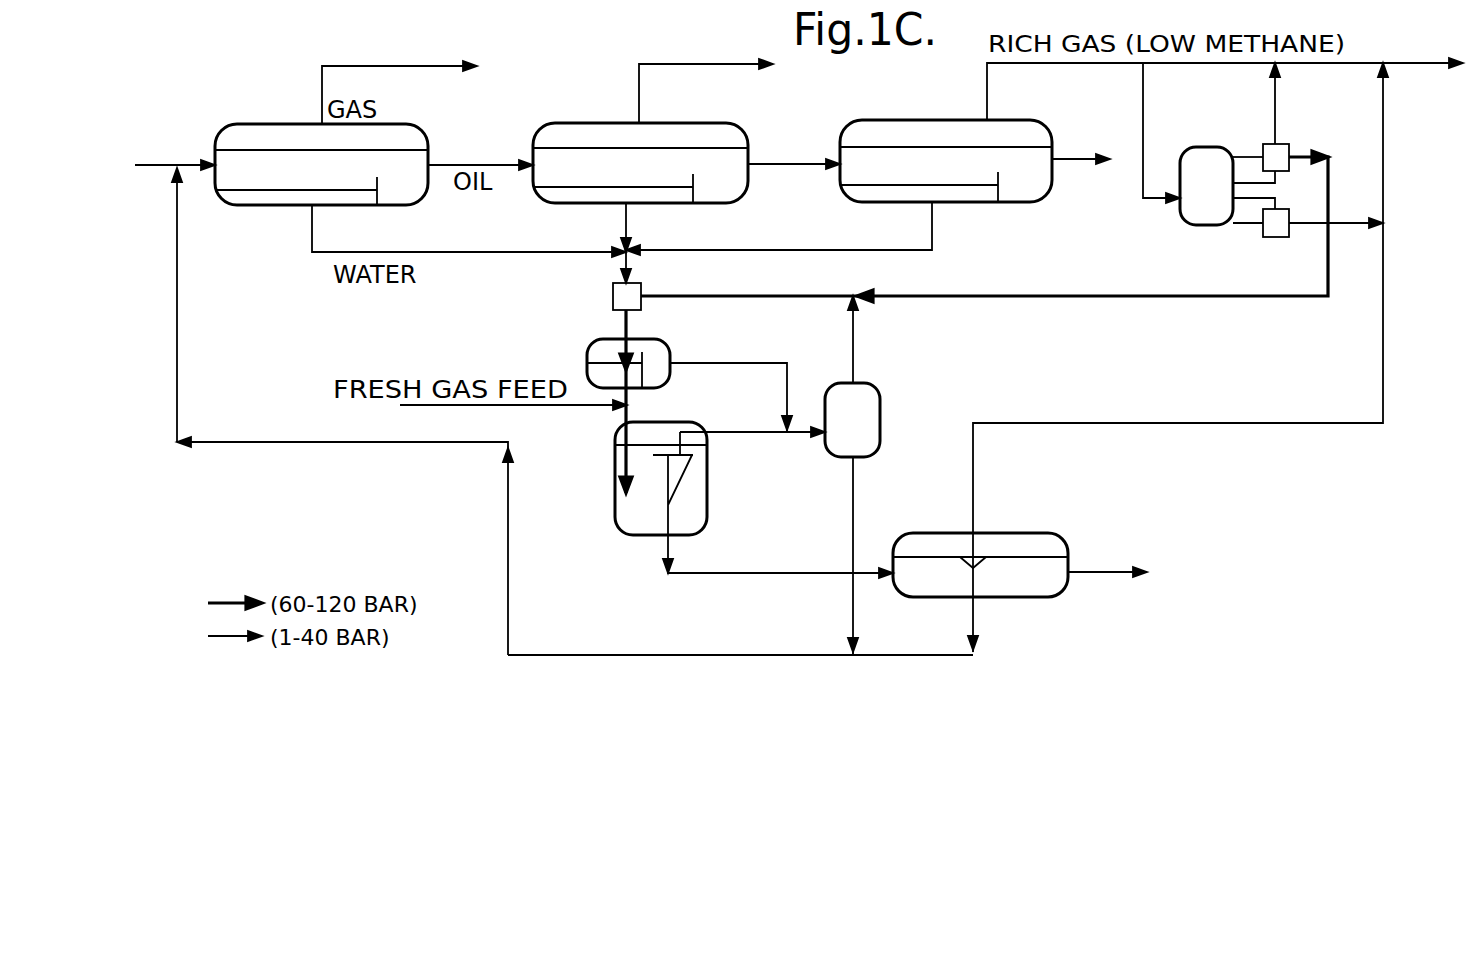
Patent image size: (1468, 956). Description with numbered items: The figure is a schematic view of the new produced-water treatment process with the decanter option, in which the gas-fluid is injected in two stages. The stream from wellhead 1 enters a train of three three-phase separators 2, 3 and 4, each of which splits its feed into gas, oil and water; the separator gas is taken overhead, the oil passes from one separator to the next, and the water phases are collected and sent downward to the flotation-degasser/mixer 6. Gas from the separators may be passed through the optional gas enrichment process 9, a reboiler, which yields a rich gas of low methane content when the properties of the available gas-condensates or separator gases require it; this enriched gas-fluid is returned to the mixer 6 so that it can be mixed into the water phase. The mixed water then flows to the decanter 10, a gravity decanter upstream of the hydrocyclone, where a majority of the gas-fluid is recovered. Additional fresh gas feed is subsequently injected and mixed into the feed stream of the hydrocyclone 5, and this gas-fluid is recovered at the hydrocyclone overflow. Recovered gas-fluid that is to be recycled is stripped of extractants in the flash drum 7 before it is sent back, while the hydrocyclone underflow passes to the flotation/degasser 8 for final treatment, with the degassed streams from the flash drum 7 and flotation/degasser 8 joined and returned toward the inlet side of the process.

The from wellhead 1 is at (153, 167).
The three-phase separator 2 is at (252, 182).
The three-phase separator 3 is at (569, 181).
The three-phase separator 4 is at (872, 179).
The hydrocyclone 5 is at (654, 506).
The flotation-degasser/mixer 6 is at (613, 297).
The flash drum 7 is at (859, 431).
The flotation/degasser 8 is at (927, 588).
The gas enrichment process 9 is at (1214, 197).
The decanter 10 is at (587, 366).